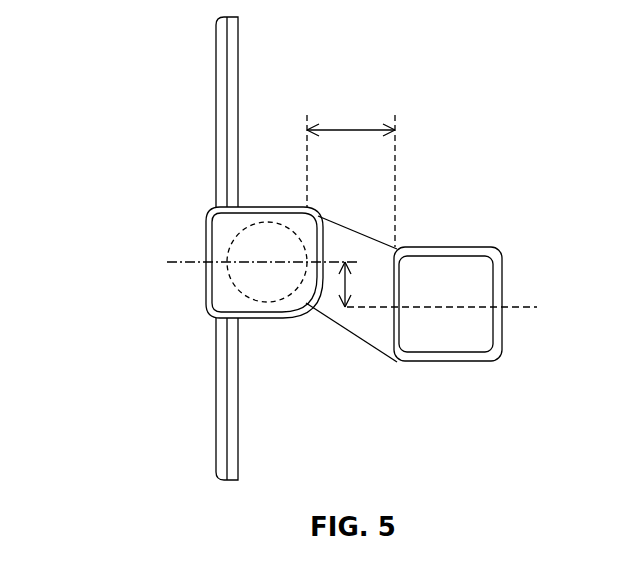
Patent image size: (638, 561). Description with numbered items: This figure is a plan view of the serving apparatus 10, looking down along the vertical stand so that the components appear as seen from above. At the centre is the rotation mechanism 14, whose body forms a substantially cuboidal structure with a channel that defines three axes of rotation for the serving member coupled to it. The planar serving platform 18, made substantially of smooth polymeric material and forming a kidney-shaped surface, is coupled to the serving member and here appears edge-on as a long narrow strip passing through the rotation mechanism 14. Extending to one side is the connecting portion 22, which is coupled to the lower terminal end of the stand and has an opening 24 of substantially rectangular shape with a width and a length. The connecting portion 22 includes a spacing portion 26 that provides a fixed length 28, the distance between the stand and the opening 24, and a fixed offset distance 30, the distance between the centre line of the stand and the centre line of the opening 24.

The serving apparatus 10 is at (117, 262).
The rotation mechanism 14 is at (207, 297).
The serving platform 18 is at (227, 117).
The connecting portion 22 is at (502, 343).
The opening 24 is at (467, 276).
The spacing portion 26 is at (373, 328).
The length 28 is at (351, 172).
The offset distance 30 is at (438, 284).